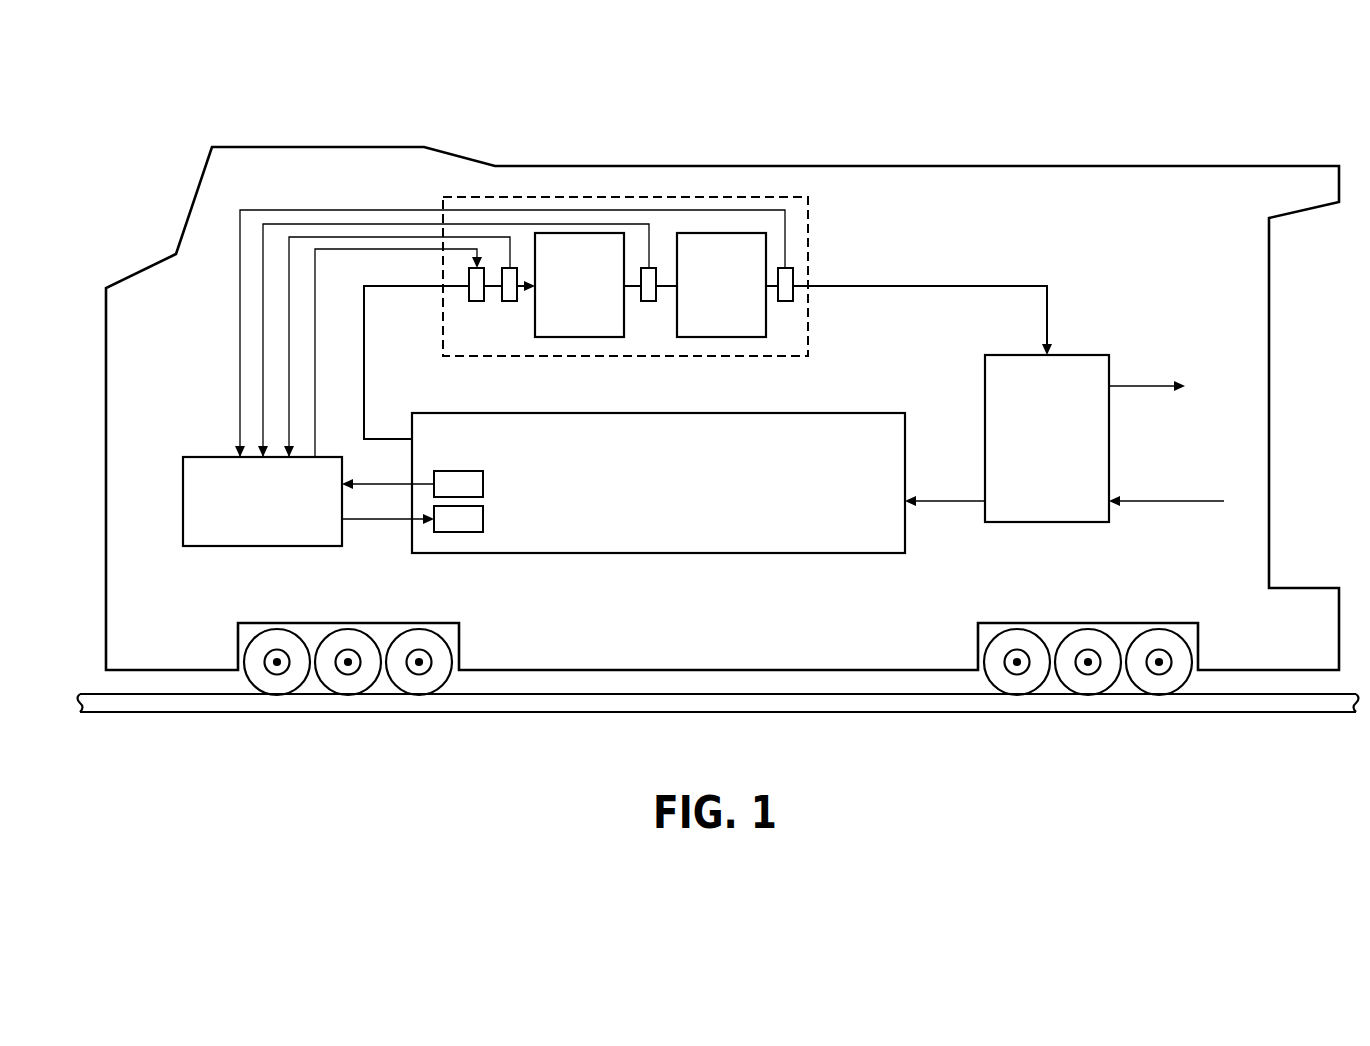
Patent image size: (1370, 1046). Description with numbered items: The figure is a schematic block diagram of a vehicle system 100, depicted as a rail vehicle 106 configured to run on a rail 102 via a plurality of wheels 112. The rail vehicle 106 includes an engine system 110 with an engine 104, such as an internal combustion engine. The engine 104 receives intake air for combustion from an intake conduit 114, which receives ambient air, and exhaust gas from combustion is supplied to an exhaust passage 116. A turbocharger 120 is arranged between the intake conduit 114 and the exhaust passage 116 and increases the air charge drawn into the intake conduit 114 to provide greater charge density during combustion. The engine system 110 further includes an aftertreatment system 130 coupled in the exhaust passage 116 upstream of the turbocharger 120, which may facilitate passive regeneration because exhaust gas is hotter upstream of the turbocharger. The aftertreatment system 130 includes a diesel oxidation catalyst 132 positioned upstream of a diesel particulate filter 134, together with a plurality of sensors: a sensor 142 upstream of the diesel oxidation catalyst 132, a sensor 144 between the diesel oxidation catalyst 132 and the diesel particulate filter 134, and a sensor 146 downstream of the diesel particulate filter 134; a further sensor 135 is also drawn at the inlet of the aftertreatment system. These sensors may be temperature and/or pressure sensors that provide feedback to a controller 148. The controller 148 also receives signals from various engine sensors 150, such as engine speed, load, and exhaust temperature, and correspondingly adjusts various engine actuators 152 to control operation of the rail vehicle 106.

The vehicle system 100 is at (722, 365).
The rail 102 is at (1268, 713).
The engine 104 is at (658, 483).
The rail vehicle 106 is at (1015, 165).
The engine system 110 is at (1060, 224).
The wheels 112 is at (444, 652).
The intake conduit 114 is at (1143, 502).
The exhaust passage 116 is at (363, 414).
The turbocharger 120 is at (1065, 425).
The aftertreatment system 130 is at (808, 242).
The diesel oxidation catalyst 132 is at (579, 285).
The diesel particulate filter 134 is at (721, 285).
The exhaust sensor 135 is at (478, 303).
The sensor 142 is at (512, 303).
The sensor 144 is at (652, 303).
The sensor 146 is at (790, 303).
The controller 148 is at (484, 378).
The engine sensors 150 is at (412, 484).
The engine actuators 152 is at (412, 519).